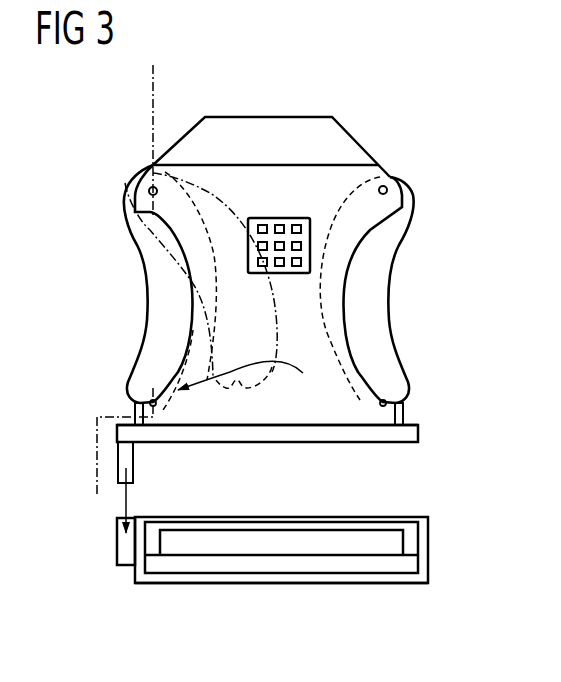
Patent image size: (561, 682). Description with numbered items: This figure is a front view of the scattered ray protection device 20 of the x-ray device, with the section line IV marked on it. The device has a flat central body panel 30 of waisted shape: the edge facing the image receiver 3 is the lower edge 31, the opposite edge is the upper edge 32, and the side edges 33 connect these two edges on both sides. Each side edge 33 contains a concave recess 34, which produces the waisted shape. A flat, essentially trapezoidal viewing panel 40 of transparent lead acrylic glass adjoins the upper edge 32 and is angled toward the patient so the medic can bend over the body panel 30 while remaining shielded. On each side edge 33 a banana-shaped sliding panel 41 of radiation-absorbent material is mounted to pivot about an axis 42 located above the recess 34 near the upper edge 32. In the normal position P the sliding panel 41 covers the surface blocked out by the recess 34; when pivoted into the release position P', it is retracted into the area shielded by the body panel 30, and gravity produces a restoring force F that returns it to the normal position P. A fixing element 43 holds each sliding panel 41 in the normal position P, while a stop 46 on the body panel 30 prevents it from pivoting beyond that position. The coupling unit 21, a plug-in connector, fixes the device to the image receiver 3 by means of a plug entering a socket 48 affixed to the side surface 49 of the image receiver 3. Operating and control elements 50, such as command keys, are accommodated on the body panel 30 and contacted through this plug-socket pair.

The image receiver 3 is at (405, 517).
The scattered ray protection device 20 is at (255, 272).
The coupling unit 21 is at (113, 501).
The body panel 30 is at (330, 427).
The lower edge 31 is at (278, 410).
The upper edge 32 is at (293, 169).
The side edges 33 is at (188, 335).
The concave recess 34 is at (160, 300).
The viewing panel 40 is at (265, 116).
The sliding panel 41 is at (220, 203).
The axis 42 is at (145, 189).
The fixing element 43 is at (152, 405).
The stop 46 is at (135, 401).
The socket 48 is at (117, 545).
The side surface 49 is at (124, 576).
The operating and control elements 50 is at (287, 274).
The normal position P is at (255, 284).
The release position P' is at (271, 291).
The restoring force F is at (212, 388).
The section line IV- IV is at (150, 88).